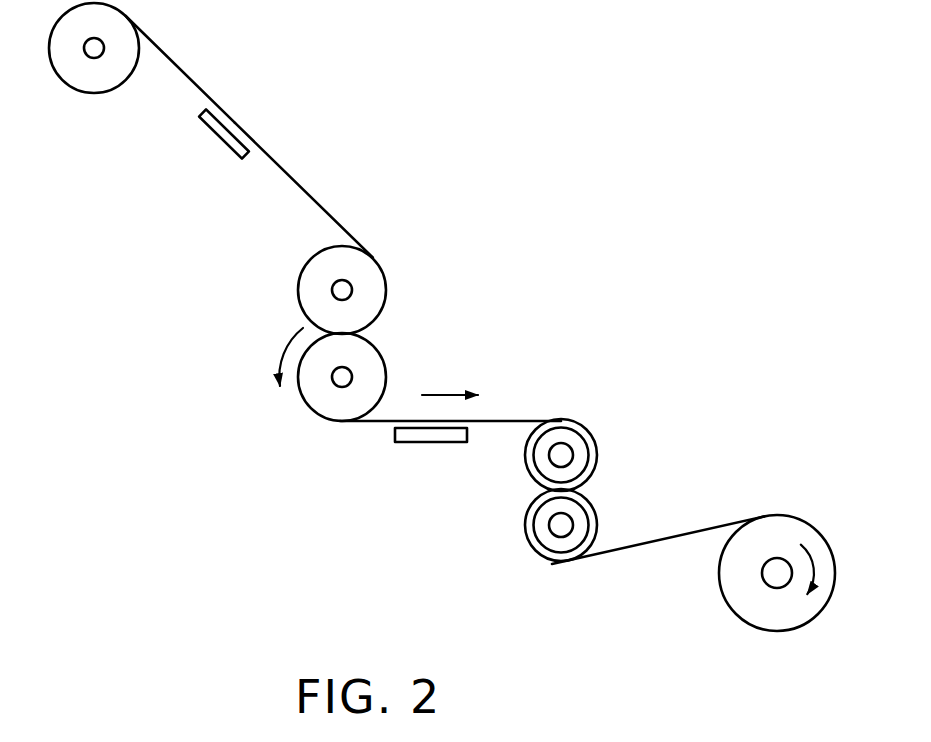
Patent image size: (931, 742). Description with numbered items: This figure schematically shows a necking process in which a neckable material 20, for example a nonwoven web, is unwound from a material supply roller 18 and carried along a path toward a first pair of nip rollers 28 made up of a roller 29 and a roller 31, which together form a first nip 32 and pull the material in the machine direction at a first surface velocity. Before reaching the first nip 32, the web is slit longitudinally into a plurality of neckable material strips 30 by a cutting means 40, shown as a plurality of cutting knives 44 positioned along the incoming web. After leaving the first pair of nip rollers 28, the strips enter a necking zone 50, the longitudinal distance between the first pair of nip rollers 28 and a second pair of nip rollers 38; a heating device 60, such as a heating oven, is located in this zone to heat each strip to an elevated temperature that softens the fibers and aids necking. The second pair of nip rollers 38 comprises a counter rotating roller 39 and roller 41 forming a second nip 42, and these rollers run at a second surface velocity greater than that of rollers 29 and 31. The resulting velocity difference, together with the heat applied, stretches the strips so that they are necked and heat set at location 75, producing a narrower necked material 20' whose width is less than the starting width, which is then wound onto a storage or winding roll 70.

The material supply roller 18 is at (60, 52).
The neckable material 20 is at (200, 69).
The neckable material strips 30 is at (284, 165).
The cutting knives 44 is at (203, 116).
The cutting means 40 is at (207, 151).
The roller 29 is at (303, 269).
The roller 31 is at (388, 375).
The first nip 32 is at (375, 336).
The first pair of nip rollers 28 is at (250, 323).
The necking zone 50 is at (505, 394).
The heating device 60 is at (426, 438).
The roller 39 is at (527, 452).
The roller 41 is at (548, 557).
The second nip 42 is at (535, 492).
The second pair of nip rollers 38 is at (621, 474).
The location 75 is at (696, 520).
The necked material 20' is at (658, 568).
The winding roll 70 is at (743, 620).